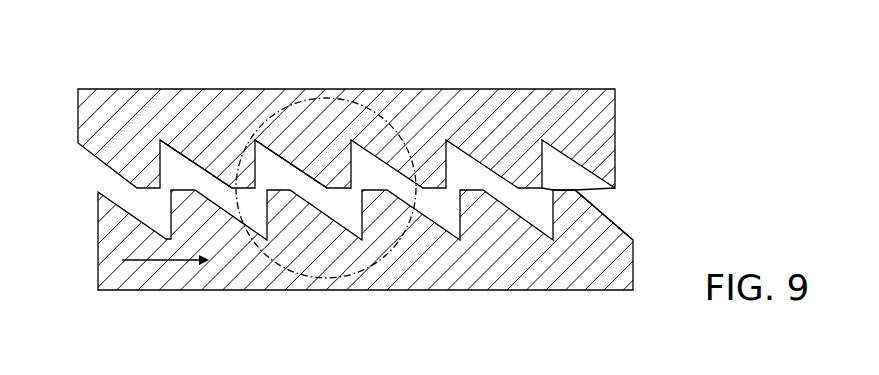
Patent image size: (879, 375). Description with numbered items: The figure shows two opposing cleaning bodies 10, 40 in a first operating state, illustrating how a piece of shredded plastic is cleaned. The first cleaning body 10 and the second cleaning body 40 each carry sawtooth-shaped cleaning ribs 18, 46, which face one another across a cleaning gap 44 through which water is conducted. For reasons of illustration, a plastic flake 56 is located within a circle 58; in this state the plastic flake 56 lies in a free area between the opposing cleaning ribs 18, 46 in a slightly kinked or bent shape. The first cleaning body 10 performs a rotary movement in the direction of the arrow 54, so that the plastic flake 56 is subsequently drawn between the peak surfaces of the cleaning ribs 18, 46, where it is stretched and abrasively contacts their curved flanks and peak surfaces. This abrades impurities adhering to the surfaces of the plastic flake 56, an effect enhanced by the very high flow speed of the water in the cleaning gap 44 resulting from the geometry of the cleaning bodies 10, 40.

The first cleaning body 10 is at (503, 290).
The cleaning rib 18 is at (577, 204).
The second cleaning body 40 is at (226, 95).
The cleaning gap 44 is at (608, 202).
The cleaning rib 46 is at (212, 146).
The arrow 54 is at (155, 261).
The plastic flake 56 is at (310, 184).
The circle 58 is at (405, 140).